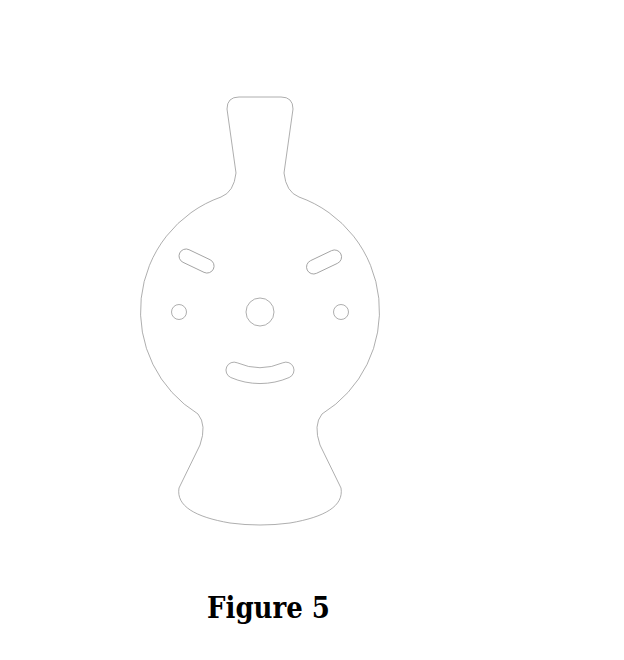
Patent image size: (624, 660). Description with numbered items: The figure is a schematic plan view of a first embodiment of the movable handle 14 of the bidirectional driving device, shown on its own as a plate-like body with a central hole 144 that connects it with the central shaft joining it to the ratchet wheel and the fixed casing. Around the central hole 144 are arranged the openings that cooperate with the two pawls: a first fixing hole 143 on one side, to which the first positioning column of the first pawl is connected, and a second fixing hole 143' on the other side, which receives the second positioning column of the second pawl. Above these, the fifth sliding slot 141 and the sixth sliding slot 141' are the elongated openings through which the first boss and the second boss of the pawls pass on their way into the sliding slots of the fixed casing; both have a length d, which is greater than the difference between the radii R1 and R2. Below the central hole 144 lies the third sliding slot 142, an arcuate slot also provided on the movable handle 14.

The movable handle 14 is at (200, 37).
The fifth sliding slot 141 is at (148, 224).
The sixth sliding slot 141' is at (376, 229).
The third sliding slot 142 is at (248, 377).
The first fixing hole 143 is at (107, 341).
The second fixing hole 143' is at (424, 329).
The central hole 144 is at (258, 313).